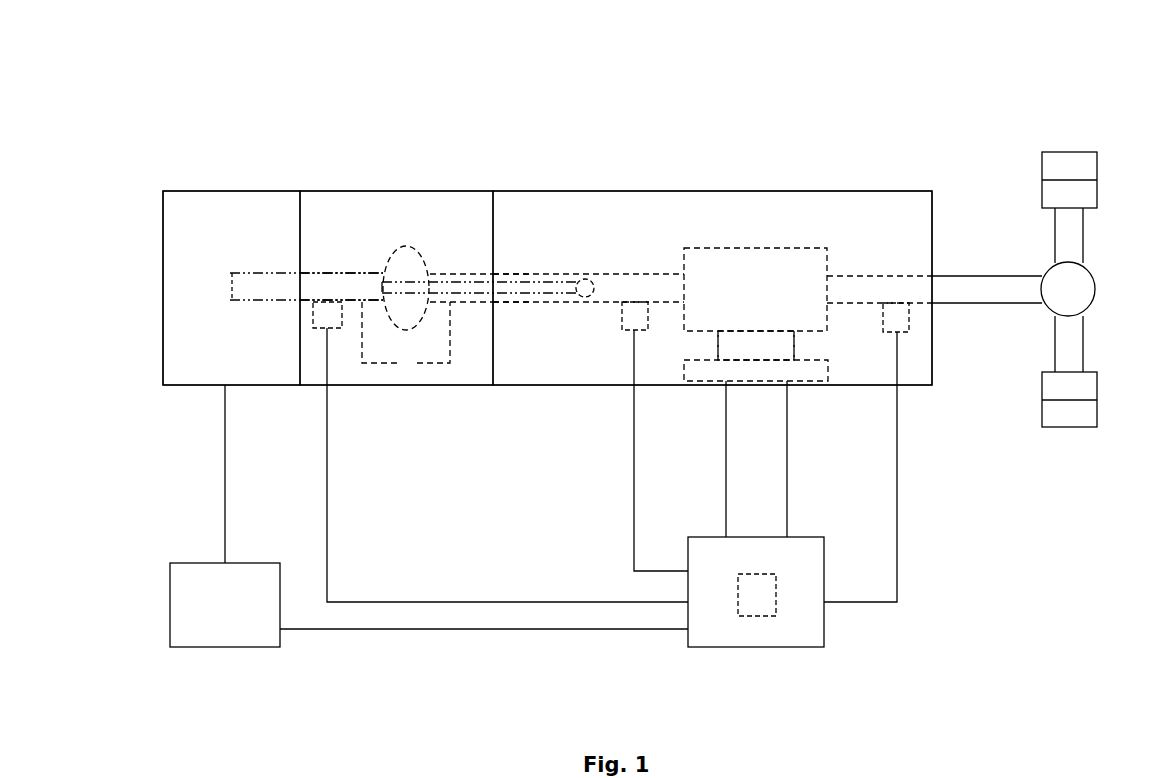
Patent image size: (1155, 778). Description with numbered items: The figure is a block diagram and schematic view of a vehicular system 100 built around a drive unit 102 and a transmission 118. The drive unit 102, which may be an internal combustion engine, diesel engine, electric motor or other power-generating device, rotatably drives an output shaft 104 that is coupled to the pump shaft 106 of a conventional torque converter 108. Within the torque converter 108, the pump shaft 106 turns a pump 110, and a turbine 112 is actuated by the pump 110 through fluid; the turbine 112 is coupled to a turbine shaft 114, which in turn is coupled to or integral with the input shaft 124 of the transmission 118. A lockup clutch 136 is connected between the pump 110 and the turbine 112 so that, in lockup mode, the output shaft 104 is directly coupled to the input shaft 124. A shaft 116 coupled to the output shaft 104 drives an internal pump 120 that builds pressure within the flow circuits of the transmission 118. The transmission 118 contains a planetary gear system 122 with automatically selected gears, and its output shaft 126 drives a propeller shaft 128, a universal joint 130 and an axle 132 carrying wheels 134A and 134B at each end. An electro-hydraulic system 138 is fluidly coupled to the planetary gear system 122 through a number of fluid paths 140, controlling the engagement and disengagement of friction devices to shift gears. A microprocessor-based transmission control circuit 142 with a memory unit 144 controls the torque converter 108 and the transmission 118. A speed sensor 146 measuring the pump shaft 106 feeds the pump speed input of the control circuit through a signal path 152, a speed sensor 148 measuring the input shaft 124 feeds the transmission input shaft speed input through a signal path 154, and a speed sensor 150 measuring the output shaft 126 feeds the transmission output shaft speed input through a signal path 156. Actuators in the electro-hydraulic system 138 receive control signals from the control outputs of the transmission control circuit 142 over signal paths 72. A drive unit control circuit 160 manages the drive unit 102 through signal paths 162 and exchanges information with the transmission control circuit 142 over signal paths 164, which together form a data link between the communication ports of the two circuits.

The vehicular system 100 is at (195, 135).
The drive unit 102 is at (255, 191).
The output shaft 104 is at (258, 273).
The pump shaft 106 is at (335, 272).
The torque converter 108 is at (403, 191).
The pump 110 is at (388, 252).
The turbine 112 is at (432, 262).
The turbine shaft 114 is at (472, 274).
The shaft 116 is at (505, 302).
The transmission 118 is at (707, 191).
The internal pump 120 is at (583, 279).
The planetary gear system 122 is at (778, 298).
The input shaft 124 is at (642, 274).
The output shaft 126 is at (878, 276).
The propeller shaft 128 is at (985, 276).
The universal joint 130 is at (1088, 306).
The axle 132 is at (1085, 240).
The wheel 134A is at (1070, 152).
The wheel 134B is at (1072, 427).
The lockup clutch 136 is at (417, 368).
The electro-hydraulic system 138 is at (806, 372).
The fluid paths 140 is at (758, 380).
The transmission control circuit 142 is at (740, 647).
The memory unit 144 is at (765, 616).
The speed sensor 146 is at (313, 314).
The speed sensor 148 is at (622, 318).
The speed sensor 150 is at (910, 318).
The signal path 152 is at (452, 602).
The signal path 154 is at (634, 482).
The signal path 156 is at (897, 510).
The drive unit control circuit 160 is at (218, 647).
The signal paths 162 is at (228, 423).
The signal paths 164 is at (417, 629).
The signal paths 72 is at (756, 459).